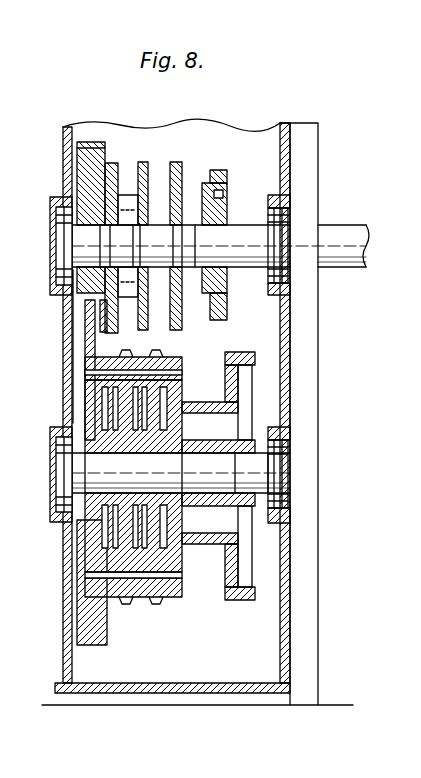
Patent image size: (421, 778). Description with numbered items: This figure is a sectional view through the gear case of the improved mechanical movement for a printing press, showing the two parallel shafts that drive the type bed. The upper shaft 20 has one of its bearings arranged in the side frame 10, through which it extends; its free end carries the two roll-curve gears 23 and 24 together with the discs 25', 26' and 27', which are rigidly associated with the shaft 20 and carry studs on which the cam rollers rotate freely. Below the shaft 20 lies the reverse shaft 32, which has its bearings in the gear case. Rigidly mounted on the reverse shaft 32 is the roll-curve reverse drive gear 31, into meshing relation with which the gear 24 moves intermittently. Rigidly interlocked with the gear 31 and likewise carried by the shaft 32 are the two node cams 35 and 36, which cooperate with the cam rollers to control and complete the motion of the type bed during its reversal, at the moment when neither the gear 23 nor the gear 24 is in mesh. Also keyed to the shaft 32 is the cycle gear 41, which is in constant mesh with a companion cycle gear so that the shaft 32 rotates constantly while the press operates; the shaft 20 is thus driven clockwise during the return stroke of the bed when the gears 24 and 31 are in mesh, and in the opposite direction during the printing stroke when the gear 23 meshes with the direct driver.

The side frame 10 is at (312, 545).
The shaft 20 is at (345, 233).
The roll-curve gear 23 is at (222, 172).
The roll-curve gear 24 is at (92, 172).
The disc 25' is at (208, 215).
The disc 26' is at (163, 230).
The disc 27' is at (130, 230).
The reverse drive gear 31 is at (92, 320).
The reverse shaft 32 is at (95, 463).
The node cam 35 is at (165, 358).
The node cam 36 is at (125, 400).
The cycle gear 41 is at (222, 360).